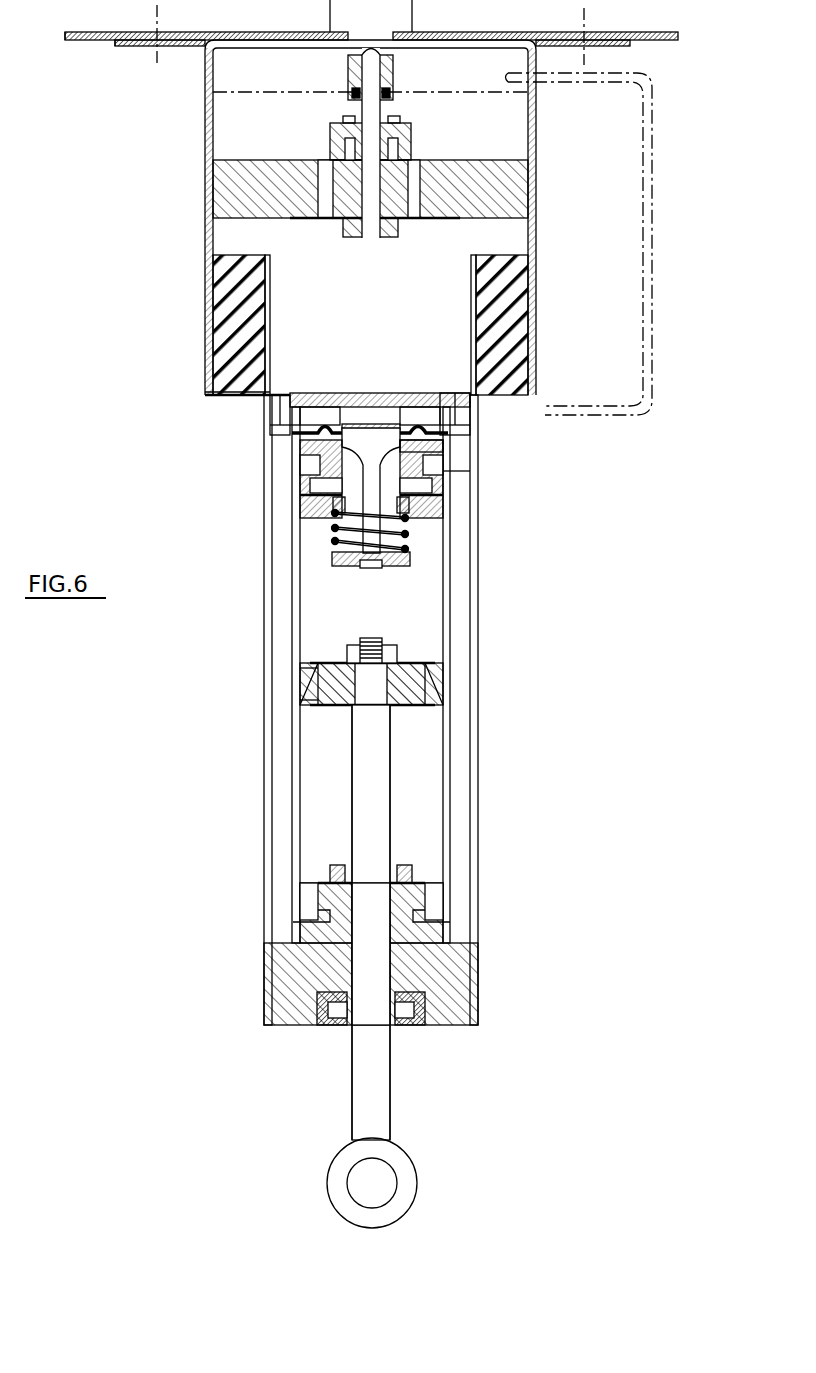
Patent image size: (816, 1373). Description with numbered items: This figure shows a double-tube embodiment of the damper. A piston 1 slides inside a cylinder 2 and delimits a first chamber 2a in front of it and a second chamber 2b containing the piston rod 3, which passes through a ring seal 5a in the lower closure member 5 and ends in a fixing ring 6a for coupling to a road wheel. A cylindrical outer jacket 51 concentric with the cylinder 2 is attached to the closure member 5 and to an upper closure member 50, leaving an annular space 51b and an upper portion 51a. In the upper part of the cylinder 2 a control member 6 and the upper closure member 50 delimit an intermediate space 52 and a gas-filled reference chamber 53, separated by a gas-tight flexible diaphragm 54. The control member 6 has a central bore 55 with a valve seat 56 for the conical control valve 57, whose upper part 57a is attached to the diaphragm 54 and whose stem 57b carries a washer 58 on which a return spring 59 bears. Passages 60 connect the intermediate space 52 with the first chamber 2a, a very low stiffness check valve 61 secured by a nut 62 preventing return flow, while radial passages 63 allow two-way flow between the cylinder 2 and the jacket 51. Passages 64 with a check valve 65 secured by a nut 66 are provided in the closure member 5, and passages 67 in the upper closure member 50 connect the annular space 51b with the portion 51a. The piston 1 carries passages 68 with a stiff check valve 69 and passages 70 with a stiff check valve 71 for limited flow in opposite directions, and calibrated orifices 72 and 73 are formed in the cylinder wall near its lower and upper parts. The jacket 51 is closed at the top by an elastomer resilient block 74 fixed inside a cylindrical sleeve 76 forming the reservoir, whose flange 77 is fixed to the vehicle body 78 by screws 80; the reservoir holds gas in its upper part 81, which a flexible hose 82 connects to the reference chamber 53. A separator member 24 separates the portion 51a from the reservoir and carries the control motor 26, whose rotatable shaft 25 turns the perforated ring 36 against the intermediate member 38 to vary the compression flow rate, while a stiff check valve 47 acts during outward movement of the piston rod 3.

The piston 1 is at (400, 680).
The cylinder 2 is at (446, 592).
The first chamber 2a is at (410, 612).
The second chamber 2b is at (410, 778).
The piston rod 3 is at (362, 788).
The closure member 5 is at (437, 963).
The ring seal 5a is at (340, 1020).
The control member 6 is at (445, 471).
The fixing ring 6a is at (405, 1172).
The separator member 24 is at (243, 193).
The rotatable shaft 25 is at (372, 75).
The control motor 26 is at (350, 16).
The ring 36 is at (340, 125).
The intermediate member 38 is at (338, 150).
The stiff check valve 47 is at (448, 219).
The upper closure member 50 is at (535, 387).
The cylindrical outer jacket 51 is at (268, 795).
The upper portion of outer jacket 51a is at (398, 300).
The annular space 51b is at (282, 722).
The intermediate space 52 is at (412, 440).
The reference chamber 53 is at (285, 421).
The flexible diaphragm 54 is at (418, 427).
The central bore 55 is at (380, 480).
The valve seat 56 is at (330, 450).
The control valve 57 is at (372, 455).
The upper part of control valve 57a is at (348, 425).
The stem 57b is at (372, 560).
The washer 58 is at (340, 565).
The return spring 59 is at (408, 550).
The passages 60 is at (320, 485).
The check valve 61 is at (337, 500).
The nut 62 is at (335, 510).
The radial passages 63 is at (420, 455).
The passages 64 is at (310, 915).
The check valve 65 is at (320, 882).
The nut 66 is at (405, 872).
The passages 67 is at (270, 395).
The passages 68 is at (318, 695).
The stiff check valve 69 is at (350, 660).
The passages 70 is at (440, 685).
The stiff check valve 71 is at (430, 708).
The calibrated orifice 72 is at (445, 842).
The calibrated orifice 73 is at (447, 522).
The elastomer resilient block 74 is at (500, 338).
The cylindrical sleeve 76 is at (208, 238).
The flange 77 is at (127, 43).
The body of the automobile vehicle 78 is at (88, 40).
The screws 80 is at (158, 47).
The upper part of reservoir 81 is at (243, 70).
The flexible hose 82 is at (655, 238).